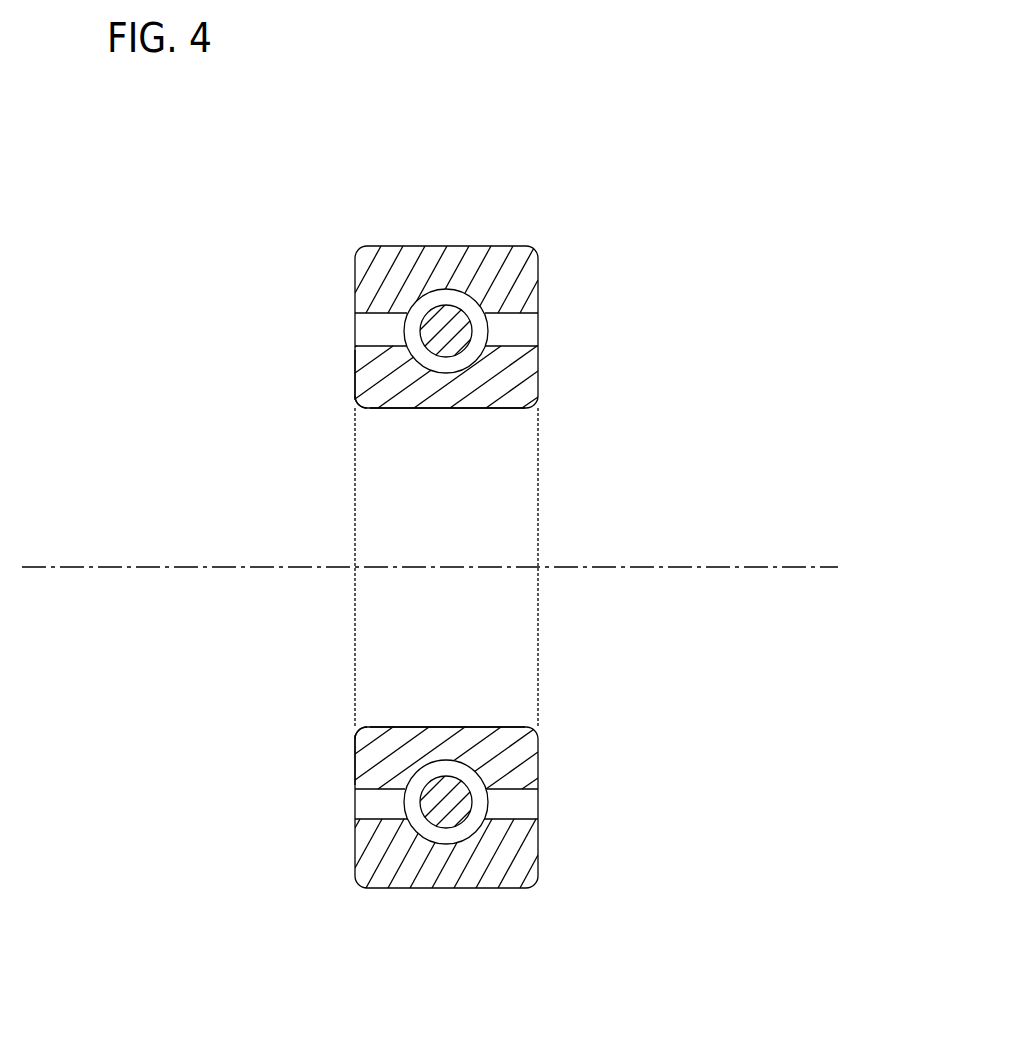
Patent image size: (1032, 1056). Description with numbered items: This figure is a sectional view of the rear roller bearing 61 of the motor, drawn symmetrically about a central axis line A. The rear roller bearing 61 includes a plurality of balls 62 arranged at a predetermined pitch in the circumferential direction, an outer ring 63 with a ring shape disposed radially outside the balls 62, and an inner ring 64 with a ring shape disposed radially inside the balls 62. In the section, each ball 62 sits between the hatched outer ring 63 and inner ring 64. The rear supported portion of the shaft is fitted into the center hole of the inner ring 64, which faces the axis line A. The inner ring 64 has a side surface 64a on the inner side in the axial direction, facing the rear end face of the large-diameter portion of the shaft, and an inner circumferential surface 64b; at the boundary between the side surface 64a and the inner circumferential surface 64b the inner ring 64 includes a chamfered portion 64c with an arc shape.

The rear roller bearing 61 is at (482, 246).
The ball 62 is at (470, 335).
The outer ring 63 is at (401, 246).
The inner ring 64 is at (538, 384).
The side surface 64a is at (354, 362).
The inner circumferential surface 64b is at (423, 409).
The chamfered portion 64c is at (356, 406).
The axis A is at (812, 567).